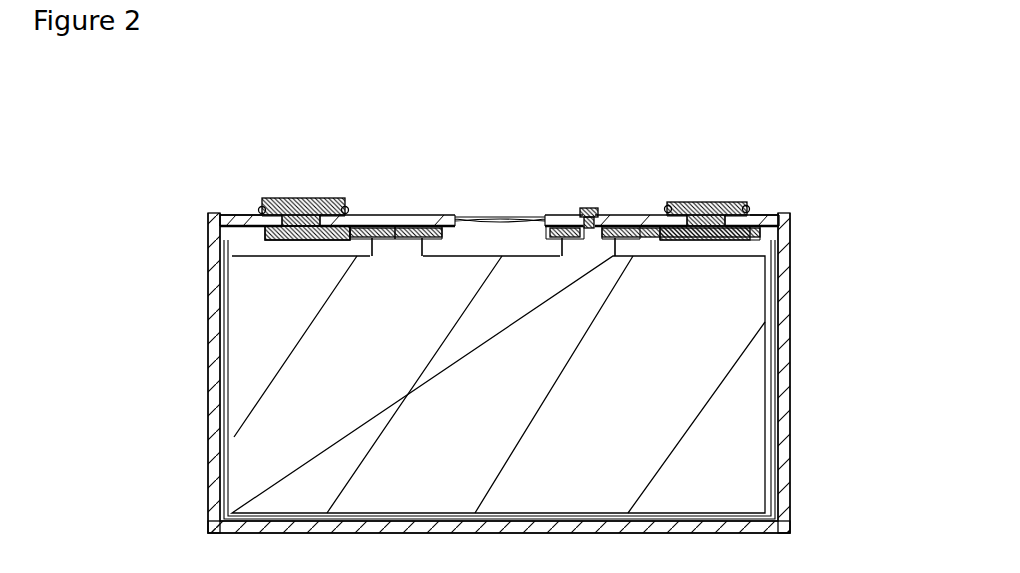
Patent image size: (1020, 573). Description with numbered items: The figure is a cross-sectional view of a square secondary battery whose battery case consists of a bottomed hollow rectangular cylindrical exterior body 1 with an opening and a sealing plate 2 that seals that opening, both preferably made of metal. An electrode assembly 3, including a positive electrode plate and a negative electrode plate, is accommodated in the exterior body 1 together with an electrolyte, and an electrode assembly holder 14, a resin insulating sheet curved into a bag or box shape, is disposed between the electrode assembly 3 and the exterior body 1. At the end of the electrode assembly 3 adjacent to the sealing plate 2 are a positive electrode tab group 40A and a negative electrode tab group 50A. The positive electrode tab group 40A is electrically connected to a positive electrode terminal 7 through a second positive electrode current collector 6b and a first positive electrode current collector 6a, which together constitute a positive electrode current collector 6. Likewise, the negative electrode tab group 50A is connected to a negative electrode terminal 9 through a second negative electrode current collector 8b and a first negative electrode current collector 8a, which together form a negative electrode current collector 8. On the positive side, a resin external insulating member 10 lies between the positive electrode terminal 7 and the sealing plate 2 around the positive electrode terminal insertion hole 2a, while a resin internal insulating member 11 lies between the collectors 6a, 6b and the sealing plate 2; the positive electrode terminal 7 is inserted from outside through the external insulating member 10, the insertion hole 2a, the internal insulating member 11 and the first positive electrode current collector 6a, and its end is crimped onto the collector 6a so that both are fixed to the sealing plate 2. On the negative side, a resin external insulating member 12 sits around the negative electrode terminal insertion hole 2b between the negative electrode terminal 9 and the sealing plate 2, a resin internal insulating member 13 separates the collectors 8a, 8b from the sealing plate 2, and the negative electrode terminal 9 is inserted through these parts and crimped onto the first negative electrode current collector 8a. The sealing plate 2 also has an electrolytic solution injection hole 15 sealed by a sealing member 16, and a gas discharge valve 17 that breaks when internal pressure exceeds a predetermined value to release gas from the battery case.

The exterior body 1 is at (790, 380).
The sealing plate 2 is at (443, 214).
The positive electrode terminal insertion hole 2a is at (752, 218).
The negative electrode terminal insertion hole 2b is at (258, 213).
The electrode assembly 3 is at (247, 467).
The positive electrode current collector 6 is at (632, 240).
The first positive electrode current collector 6a is at (758, 237).
The second positive electrode current collector 6b is at (638, 238).
The positive electrode terminal 7 is at (705, 202).
The negative electrode current collector 8 is at (327, 243).
The first negative electrode current collector 8a is at (285, 232).
The second negative electrode current collector 8b is at (372, 236).
The negative electrode terminal 9 is at (300, 198).
The external insulating member 10 is at (748, 208).
The internal insulating member 11 is at (615, 235).
The external insulating member 12 is at (261, 207).
The internal insulating member 13 is at (422, 233).
The electrode assembly holder 14 is at (782, 428).
The electrolytic solution injection hole 15 is at (578, 227).
The sealing member 16 is at (590, 206).
The gas discharge valve 17 is at (494, 217).
The positive electrode tab group 40A is at (548, 228).
The negative electrode tab group 50A is at (400, 228).